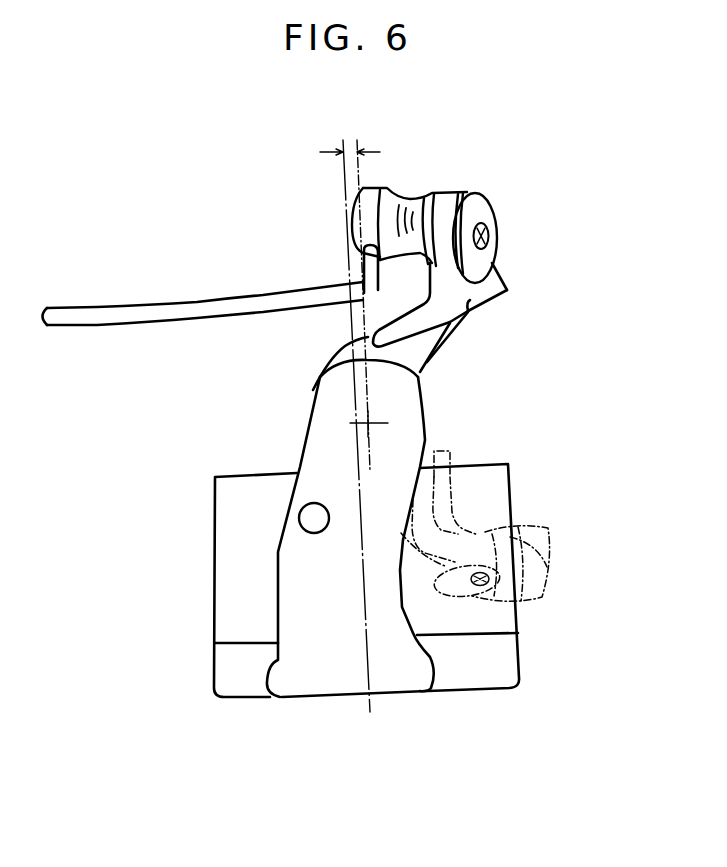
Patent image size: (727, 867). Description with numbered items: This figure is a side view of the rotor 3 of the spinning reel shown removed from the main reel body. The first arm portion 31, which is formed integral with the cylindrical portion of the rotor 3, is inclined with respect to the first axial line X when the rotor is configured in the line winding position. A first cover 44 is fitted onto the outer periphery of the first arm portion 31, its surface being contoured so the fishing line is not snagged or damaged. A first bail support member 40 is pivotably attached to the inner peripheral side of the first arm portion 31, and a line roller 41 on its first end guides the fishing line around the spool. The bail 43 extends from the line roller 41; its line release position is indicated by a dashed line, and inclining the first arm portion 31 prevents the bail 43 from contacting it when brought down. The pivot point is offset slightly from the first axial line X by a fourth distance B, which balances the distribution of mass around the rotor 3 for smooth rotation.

The rotor 3 is at (526, 654).
The first bail support member 40 is at (470, 322).
The line roller 41 is at (400, 203).
The bail 43 is at (177, 310).
The first cover 44 is at (414, 424).
The first arm portion 31 is at (439, 418).
The fourth distance B is at (350, 130).
The first axial line X is at (363, 445).